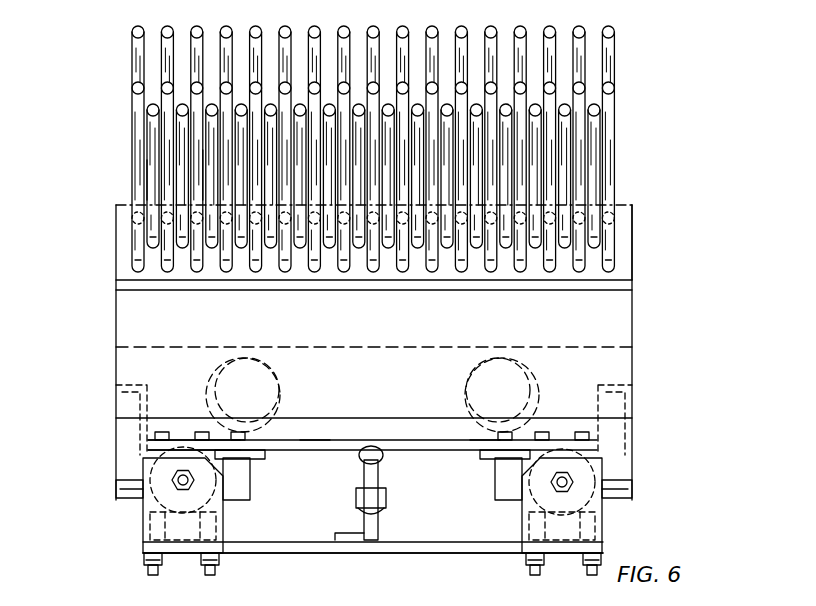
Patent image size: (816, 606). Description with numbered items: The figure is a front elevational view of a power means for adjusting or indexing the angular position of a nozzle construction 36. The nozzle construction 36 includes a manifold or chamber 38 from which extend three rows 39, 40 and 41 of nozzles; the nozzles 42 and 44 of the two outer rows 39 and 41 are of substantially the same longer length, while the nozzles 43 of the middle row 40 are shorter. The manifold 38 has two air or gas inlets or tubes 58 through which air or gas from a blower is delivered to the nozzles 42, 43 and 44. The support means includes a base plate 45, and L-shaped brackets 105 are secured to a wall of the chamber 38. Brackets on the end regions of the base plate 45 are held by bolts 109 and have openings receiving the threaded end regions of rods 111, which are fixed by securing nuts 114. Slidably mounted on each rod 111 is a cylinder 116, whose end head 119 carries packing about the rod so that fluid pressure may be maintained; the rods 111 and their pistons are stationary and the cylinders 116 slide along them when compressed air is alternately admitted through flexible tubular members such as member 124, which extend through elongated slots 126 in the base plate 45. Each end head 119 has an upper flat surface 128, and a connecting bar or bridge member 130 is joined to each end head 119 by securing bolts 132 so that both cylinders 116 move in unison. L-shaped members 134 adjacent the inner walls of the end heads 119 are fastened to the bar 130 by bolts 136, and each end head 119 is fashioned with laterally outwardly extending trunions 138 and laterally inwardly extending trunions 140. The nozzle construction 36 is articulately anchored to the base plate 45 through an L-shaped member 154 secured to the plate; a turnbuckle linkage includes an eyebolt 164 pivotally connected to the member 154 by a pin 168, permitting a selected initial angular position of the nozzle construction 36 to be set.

The nozzle construction 36 is at (621, 192).
The manifold or chamber 38 is at (632, 318).
The row of nozzles 39 is at (618, 32).
The row of nozzles 40 is at (612, 110).
The row of nozzles 41 is at (620, 87).
The nozzles 42 is at (193, 43).
The nozzles 43 is at (213, 127).
The nozzles 44 is at (199, 162).
The base plate 45 is at (312, 553).
The air or gas inlets or tubes 58 is at (328, 442).
The L-shaped brackets 105 is at (118, 375).
The bolts 109 is at (148, 574).
The rods 111 is at (180, 486).
The securing nuts 114 is at (176, 482).
The cylinder 116 is at (150, 522).
The end head 119 is at (150, 452).
The tubular member 124 is at (175, 578).
The elongated slots 126 is at (225, 546).
The upper flat surface 128 is at (140, 440).
The connecting bar or bridge member 130 is at (336, 445).
The securing bolts 132 is at (202, 433).
The L-shaped members 134 is at (265, 455).
The bolts 136 is at (238, 433).
The laterally outwardly extending trunions or pins 138 is at (120, 490).
The laterally inwardly extending trunions or pins 140 is at (252, 492).
The L-shaped member 154 is at (345, 538).
The eyebolt 164 is at (382, 504).
The pin 168 is at (356, 500).